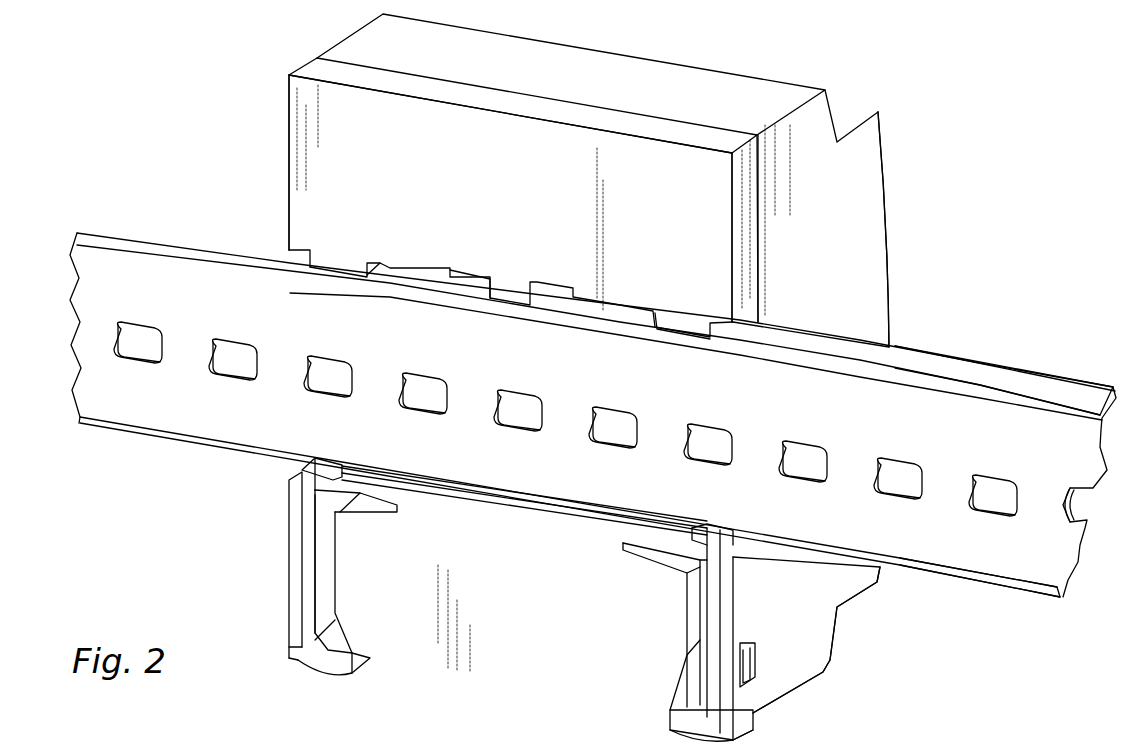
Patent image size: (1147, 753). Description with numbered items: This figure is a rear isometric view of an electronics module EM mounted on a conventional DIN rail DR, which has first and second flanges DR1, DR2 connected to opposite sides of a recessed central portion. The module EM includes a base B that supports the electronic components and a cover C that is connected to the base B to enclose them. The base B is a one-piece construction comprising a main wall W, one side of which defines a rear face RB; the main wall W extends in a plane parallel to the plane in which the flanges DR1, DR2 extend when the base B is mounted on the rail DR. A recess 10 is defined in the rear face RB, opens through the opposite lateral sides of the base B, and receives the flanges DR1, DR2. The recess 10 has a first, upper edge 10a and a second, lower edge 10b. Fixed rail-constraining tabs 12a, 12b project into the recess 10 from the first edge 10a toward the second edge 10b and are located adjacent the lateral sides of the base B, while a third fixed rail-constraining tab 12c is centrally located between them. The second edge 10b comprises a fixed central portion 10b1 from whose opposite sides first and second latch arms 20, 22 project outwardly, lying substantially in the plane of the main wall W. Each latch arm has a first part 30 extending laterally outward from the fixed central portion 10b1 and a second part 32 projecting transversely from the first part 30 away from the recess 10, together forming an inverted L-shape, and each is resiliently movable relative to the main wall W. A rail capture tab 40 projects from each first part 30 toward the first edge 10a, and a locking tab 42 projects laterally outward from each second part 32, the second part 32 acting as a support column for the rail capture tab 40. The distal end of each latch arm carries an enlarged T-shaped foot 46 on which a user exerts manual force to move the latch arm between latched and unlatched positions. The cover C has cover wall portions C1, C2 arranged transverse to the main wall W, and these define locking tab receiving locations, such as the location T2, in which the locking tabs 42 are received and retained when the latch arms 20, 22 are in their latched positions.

The recess 10 is at (602, 305).
The first edge of recess 10a is at (398, 272).
The second edge of recess 10b is at (503, 500).
The fixed central portion 10b1 is at (570, 517).
The first fixed rail-constraining tab 12a is at (337, 262).
The second fixed rail-constraining tab 12b is at (683, 327).
The third fixed rail-constraining tab 12c is at (513, 292).
The first latch arm 20 is at (551, 584).
The second latch arm 22 is at (717, 607).
The first part of latch arm 30 is at (368, 493).
The second part of latch arm 32 is at (328, 595).
The rail capture tab 40 is at (320, 470).
The locking tab 42 is at (747, 667).
The enlarged foot 46 is at (327, 670).
The second locking tab receiving location T2 is at (742, 647).
The first cover wall portion C1 is at (292, 530).
The second cover wall portion C2 is at (780, 685).
The rear face of base RB is at (348, 159).
The main wall W is at (540, 198).
The electronics module EM is at (838, 192).
The base B is at (747, 267).
The cover C is at (882, 312).
The DIN rail mounting structure DR is at (958, 352).
The first flange DR1 is at (1025, 383).
The second flange DR2 is at (987, 585).